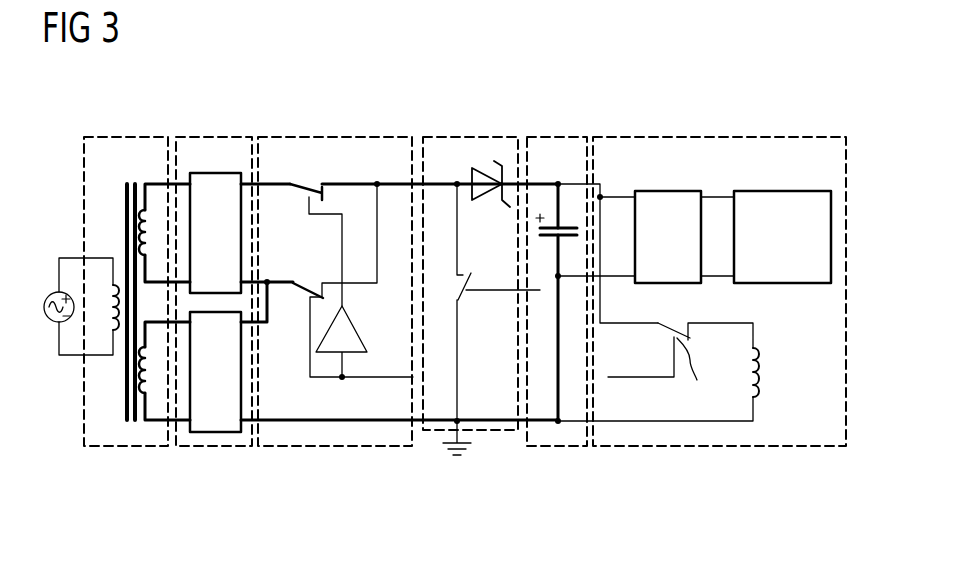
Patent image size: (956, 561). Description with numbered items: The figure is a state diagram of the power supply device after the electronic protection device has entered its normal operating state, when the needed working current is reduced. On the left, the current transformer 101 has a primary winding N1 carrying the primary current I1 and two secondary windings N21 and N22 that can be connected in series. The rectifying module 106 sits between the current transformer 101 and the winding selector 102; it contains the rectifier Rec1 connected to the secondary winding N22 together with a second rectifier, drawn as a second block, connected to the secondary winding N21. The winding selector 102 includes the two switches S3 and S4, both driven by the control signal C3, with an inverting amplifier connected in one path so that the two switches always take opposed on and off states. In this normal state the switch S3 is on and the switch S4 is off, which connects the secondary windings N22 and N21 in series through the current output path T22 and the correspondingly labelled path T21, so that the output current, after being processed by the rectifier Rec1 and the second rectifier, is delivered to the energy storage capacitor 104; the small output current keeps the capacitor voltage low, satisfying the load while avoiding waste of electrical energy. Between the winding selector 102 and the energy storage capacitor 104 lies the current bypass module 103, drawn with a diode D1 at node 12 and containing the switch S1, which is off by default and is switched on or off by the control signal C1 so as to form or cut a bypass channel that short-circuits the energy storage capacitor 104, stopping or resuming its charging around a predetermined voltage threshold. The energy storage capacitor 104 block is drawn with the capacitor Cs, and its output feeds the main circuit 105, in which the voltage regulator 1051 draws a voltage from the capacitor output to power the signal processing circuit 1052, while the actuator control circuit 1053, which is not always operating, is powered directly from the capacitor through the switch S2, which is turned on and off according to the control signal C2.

The current transformer 101 is at (111, 137).
The rectifying module 106 is at (204, 137).
The winding selector 102 is at (333, 137).
The current bypass module 103 is at (434, 137).
The energy storage capacitor 104 is at (562, 137).
The main circuit 105 is at (718, 137).
The voltage regulator 1051 is at (657, 191).
The signal processing circuit 1052 is at (778, 191).
The actuator control circuit 1053 is at (760, 368).
The primary winding current I1 is at (55, 293).
The primary winding N1 is at (117, 283).
The secondary winding N22 is at (146, 208).
The secondary winding N21 is at (146, 395).
The rectifier Rec1 is at (231, 173).
The current output path T22 is at (304, 228).
The switch T21 is at (343, 280).
The switch S3 is at (319, 186).
The switch S4 is at (306, 290).
The control signal C3 is at (359, 331).
The zener diode D1 is at (494, 162).
The node 12 is at (439, 200).
The switch S1 is at (461, 301).
The control signal C1 is at (503, 272).
The storage capacitor Cs is at (547, 214).
The switch S2 is at (705, 363).
The control signal C2 is at (641, 360).